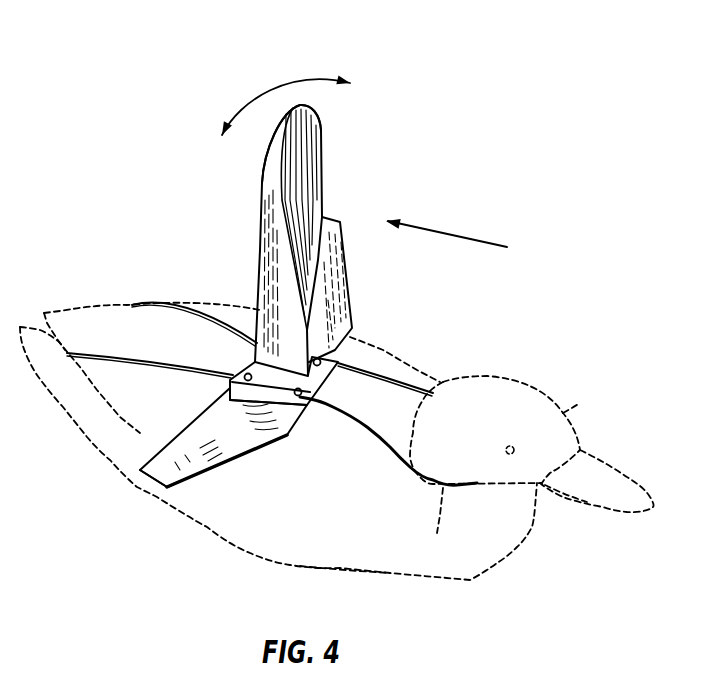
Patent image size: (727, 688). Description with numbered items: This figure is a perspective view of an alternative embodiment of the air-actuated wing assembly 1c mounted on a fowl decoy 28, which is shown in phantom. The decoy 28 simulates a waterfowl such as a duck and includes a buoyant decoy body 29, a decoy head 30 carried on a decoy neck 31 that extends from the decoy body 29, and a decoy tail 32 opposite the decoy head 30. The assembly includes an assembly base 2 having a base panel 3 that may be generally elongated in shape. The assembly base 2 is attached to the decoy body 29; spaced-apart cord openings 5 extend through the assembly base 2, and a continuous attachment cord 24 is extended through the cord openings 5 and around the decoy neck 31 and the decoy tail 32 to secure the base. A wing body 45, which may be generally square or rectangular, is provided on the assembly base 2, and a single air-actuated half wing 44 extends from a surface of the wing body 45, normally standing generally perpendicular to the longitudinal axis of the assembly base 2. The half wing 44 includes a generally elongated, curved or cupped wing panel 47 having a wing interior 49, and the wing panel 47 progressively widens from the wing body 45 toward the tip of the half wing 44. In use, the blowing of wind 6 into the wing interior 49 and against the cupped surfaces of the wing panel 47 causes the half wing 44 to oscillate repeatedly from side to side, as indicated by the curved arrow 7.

The air-actuated wing assembly 1c is at (420, 165).
The assembly base 2 is at (153, 500).
The base panel 3 is at (237, 442).
The cord openings 5 is at (243, 378).
The wind 6 is at (460, 236).
The curved arrow 7 is at (265, 87).
The attachment cord 24 is at (390, 443).
The decoy 28 is at (472, 592).
The decoy body 29 is at (393, 576).
The decoy head 30 is at (582, 403).
The decoy neck 31 is at (436, 537).
The decoy tail 32 is at (82, 323).
The air-actuated half wing 44 is at (251, 186).
The wing body 45 is at (350, 333).
The wing panel 47 is at (312, 176).
The wing interior 49 is at (322, 146).